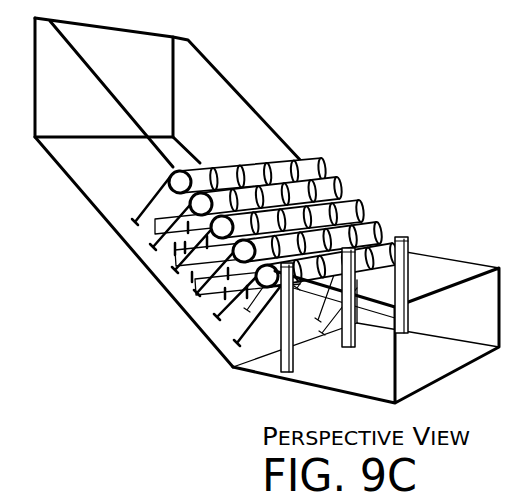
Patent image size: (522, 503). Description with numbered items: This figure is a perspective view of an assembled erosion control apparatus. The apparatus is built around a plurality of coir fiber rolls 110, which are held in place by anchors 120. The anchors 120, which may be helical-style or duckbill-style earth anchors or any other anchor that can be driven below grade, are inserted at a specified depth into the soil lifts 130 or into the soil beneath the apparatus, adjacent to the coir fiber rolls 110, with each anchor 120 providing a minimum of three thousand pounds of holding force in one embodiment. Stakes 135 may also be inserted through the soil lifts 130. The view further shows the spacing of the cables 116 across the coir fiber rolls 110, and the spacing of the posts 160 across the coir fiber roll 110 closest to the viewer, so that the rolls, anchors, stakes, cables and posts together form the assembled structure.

The coir fiber roll 110 is at (285, 214).
The cable 116 is at (303, 212).
The anchor 120 is at (147, 200).
The soil lift 130 is at (153, 228).
The stake 135 is at (222, 277).
The post 160 is at (407, 238).